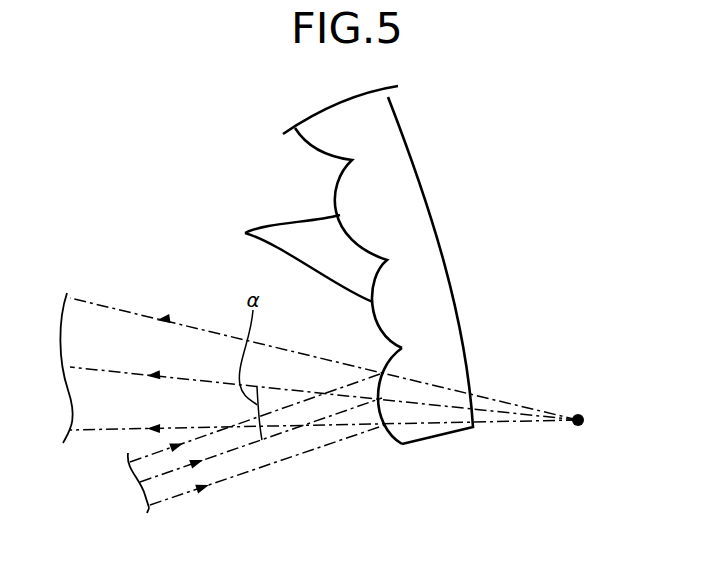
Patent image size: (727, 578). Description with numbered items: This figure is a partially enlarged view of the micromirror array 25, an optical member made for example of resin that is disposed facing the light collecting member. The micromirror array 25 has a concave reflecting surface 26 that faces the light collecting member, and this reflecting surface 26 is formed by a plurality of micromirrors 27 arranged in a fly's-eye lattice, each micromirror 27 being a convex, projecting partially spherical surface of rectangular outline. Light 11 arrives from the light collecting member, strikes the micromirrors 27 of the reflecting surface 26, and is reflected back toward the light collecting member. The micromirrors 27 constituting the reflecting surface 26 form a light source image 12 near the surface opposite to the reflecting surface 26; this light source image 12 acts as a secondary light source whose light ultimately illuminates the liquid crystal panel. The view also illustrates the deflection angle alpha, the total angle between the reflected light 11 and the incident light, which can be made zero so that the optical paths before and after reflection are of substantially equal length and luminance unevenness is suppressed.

The light 11 is at (257, 470).
The light source image 12 is at (581, 411).
The micromirror array 25 is at (474, 215).
The reflecting surface 26 is at (375, 464).
The micromirror 27 is at (294, 258).